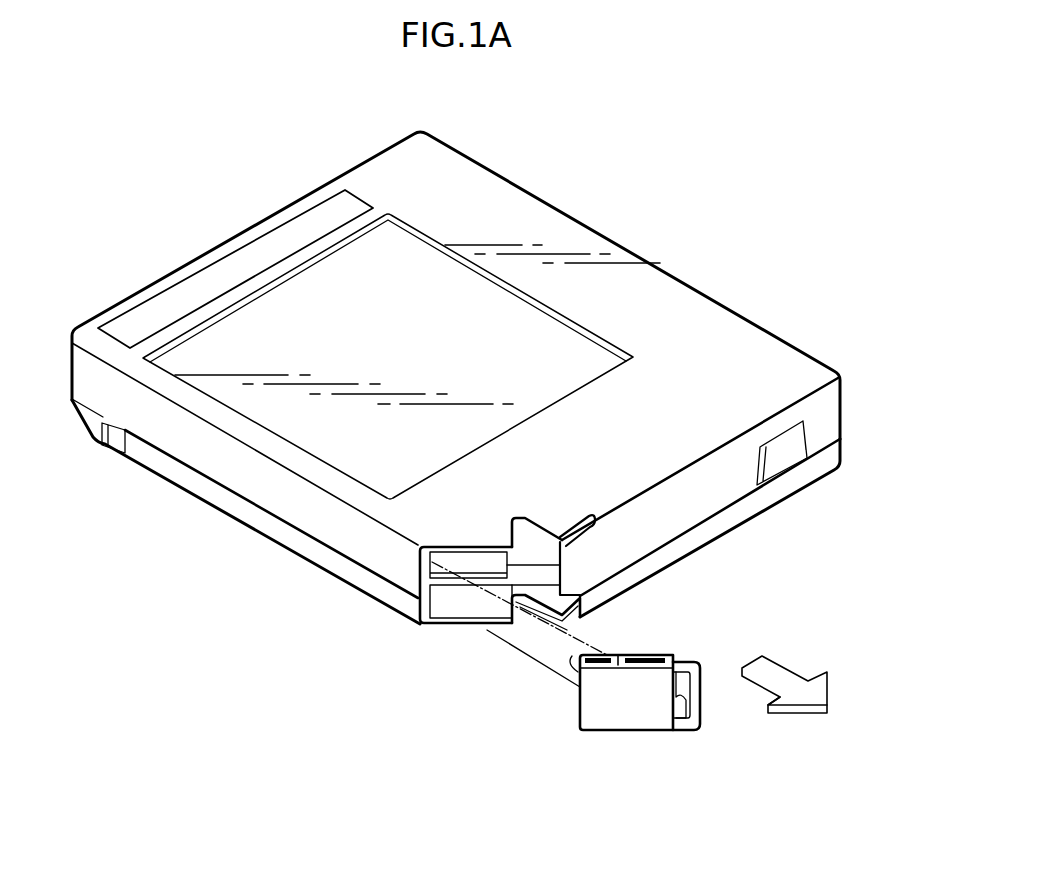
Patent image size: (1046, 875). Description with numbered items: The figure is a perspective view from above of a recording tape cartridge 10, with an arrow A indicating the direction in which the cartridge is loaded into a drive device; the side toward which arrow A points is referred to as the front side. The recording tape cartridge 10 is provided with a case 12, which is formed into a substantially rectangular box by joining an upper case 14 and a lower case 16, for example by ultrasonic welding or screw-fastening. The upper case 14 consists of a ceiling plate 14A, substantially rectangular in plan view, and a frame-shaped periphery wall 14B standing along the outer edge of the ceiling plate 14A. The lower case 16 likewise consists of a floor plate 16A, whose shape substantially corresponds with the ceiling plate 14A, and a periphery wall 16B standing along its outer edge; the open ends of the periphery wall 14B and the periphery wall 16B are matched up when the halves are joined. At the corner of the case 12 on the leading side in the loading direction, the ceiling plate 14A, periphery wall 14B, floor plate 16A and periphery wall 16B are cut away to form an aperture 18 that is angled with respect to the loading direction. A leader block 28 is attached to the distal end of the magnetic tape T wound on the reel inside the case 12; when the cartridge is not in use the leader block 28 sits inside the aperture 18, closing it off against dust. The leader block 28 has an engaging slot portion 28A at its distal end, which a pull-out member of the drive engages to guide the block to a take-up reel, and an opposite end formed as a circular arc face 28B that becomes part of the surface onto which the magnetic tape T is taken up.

The recording tape cartridge 10 is at (655, 223).
The case 12 is at (793, 522).
The upper case 14 is at (698, 498).
The ceiling plate 14A is at (726, 332).
The periphery wall 14B is at (307, 510).
The lower case 16 is at (697, 540).
The floor plate 16A is at (442, 615).
The periphery wall 16B is at (337, 565).
The aperture 18 is at (488, 557).
The leader block 28 is at (627, 737).
The engaging slot portion 28A is at (683, 712).
The circular arc face 28B is at (572, 658).
The magnetic tape T is at (556, 633).
The arrow A is at (775, 670).